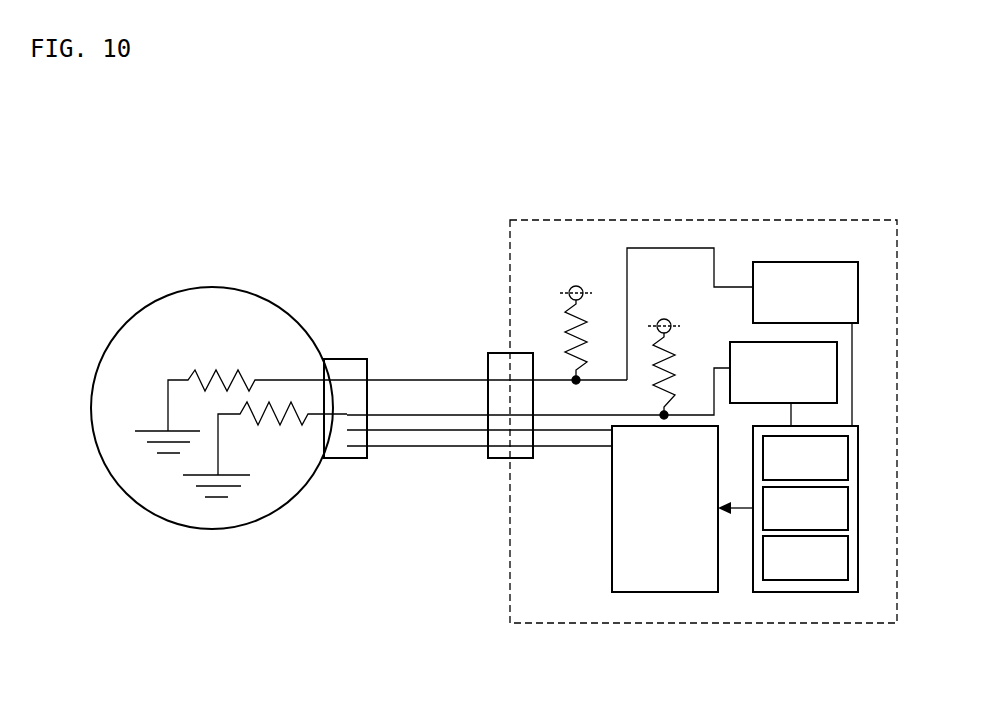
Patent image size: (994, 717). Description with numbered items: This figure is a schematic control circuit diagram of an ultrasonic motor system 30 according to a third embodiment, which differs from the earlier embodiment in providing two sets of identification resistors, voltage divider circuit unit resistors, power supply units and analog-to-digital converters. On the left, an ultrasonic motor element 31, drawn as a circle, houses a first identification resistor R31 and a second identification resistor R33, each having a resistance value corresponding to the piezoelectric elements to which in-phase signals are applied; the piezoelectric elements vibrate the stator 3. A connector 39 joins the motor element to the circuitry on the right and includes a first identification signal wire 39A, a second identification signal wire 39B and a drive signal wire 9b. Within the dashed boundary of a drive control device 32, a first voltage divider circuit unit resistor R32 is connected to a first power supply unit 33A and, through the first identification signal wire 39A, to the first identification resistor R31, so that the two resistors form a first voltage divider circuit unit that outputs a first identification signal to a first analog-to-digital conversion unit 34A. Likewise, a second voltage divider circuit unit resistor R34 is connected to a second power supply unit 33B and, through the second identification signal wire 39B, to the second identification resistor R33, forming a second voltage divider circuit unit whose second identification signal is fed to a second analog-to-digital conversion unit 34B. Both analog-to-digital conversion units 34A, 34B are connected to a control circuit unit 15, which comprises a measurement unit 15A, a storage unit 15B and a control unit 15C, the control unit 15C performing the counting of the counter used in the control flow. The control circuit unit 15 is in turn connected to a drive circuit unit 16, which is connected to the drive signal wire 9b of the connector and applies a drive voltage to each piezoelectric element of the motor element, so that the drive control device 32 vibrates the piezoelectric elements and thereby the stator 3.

The ultrasonic motor system 30 is at (130, 171).
The ultrasonic motor element 31 is at (158, 292).
The stator 3 is at (280, 322).
The first identification resistor R31 is at (236, 378).
The second identification resistor R33 is at (283, 418).
The connector 39 is at (340, 350).
The first identification signal wire 39A is at (392, 378).
The second identification signal wire 39B is at (446, 413).
The drive signal wire 9b is at (387, 432).
The drive control device 32 is at (826, 228).
The first voltage divider circuit unit resistor R32 is at (570, 323).
The first power supply unit 33A is at (575, 286).
The second voltage divider circuit unit resistor R34 is at (657, 353).
The second power supply unit 33B is at (671, 321).
The first analog-to-digital conversion unit 34A is at (848, 270).
The second analog-to-digital conversion unit 34B is at (771, 348).
The drive circuit unit 16 is at (668, 580).
The control circuit unit 15 is at (817, 564).
The measurement unit 15A is at (843, 476).
The storage unit 15B is at (767, 525).
The control unit 15C is at (795, 575).